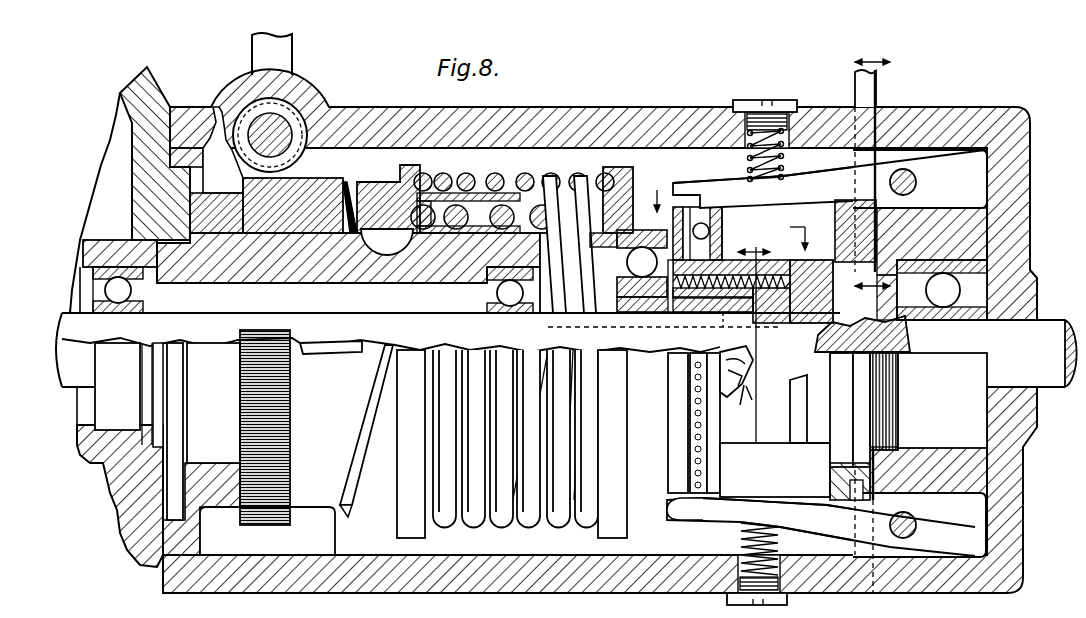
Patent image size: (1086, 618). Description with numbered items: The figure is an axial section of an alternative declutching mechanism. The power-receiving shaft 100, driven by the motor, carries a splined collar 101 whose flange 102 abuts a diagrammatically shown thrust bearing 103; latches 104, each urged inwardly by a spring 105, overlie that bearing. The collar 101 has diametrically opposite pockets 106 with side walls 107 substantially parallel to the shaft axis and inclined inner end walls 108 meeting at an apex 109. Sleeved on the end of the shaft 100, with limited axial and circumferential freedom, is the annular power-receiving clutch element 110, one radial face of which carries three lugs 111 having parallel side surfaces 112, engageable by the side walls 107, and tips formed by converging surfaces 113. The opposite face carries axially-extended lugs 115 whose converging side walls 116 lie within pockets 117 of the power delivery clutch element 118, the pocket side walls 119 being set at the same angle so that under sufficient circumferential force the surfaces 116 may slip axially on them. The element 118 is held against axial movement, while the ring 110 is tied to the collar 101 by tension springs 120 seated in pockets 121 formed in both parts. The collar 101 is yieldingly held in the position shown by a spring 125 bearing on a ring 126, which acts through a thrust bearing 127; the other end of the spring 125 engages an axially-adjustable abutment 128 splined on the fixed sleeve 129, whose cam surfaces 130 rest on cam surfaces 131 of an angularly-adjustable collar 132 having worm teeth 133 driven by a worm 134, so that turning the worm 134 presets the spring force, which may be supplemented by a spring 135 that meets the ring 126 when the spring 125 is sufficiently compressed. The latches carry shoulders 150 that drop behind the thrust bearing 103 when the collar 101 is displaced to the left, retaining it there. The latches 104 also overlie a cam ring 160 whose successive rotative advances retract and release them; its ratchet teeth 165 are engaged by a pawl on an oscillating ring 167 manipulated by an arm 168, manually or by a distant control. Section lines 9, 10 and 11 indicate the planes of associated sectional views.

The section line 9 is at (753, 355).
The section line 10 is at (738, 218).
The section line 11 is at (875, 173).
The power-receiving shaft 100 is at (60, 332).
The collar 101 is at (705, 262).
The flange 102 is at (677, 210).
The thrust bearing 103 is at (722, 221).
The latches 104 is at (713, 192).
The spring 105 is at (784, 158).
The pockets 106 is at (742, 395).
The side walls 107 is at (752, 386).
The inner end walls 108 is at (736, 380).
The apex 109 is at (722, 362).
The power-receiving clutch element 110 is at (796, 444).
The lugs 111 is at (748, 383).
The side surfaces 112 is at (746, 341).
The converging surfaces 113 is at (746, 361).
The axially-extended lugs 115 is at (802, 366).
The side walls 116 is at (804, 378).
The pocket 117 is at (806, 386).
The power delivery clutch element 118 is at (812, 441).
The side walls 119 is at (793, 386).
The tension springs 120 is at (787, 262).
The pocket 121 is at (704, 300).
The spring 125 is at (586, 178).
The ring 126 is at (616, 170).
The thrust bearing 127 is at (642, 270).
The axially-adjustable abutment 128 is at (378, 184).
The fixed sleeve 129 is at (412, 282).
The cam surfaces 130 is at (350, 515).
The cam surfaces 131 is at (385, 370).
The angularly-adjustable collar 132 is at (322, 190).
The worm teeth 133 is at (276, 510).
The worm 134 is at (300, 113).
The spring 135 is at (503, 206).
The shoulders 150 is at (698, 520).
The cam ring 160 is at (838, 500).
The ratchet teeth 165 is at (857, 503).
The oscillating ring 167 is at (866, 500).
The arm 168 is at (878, 86).